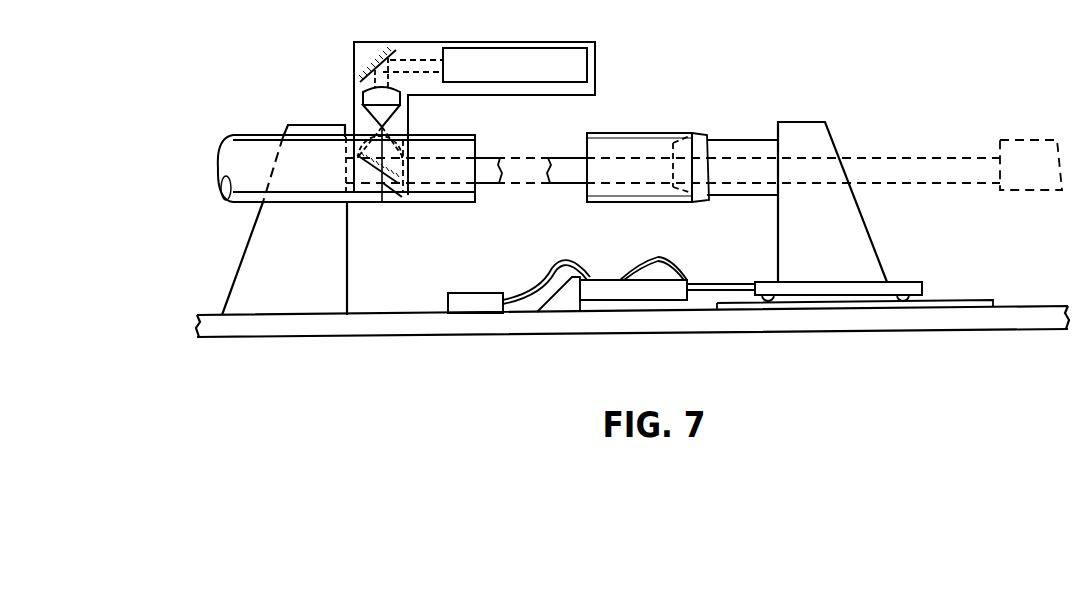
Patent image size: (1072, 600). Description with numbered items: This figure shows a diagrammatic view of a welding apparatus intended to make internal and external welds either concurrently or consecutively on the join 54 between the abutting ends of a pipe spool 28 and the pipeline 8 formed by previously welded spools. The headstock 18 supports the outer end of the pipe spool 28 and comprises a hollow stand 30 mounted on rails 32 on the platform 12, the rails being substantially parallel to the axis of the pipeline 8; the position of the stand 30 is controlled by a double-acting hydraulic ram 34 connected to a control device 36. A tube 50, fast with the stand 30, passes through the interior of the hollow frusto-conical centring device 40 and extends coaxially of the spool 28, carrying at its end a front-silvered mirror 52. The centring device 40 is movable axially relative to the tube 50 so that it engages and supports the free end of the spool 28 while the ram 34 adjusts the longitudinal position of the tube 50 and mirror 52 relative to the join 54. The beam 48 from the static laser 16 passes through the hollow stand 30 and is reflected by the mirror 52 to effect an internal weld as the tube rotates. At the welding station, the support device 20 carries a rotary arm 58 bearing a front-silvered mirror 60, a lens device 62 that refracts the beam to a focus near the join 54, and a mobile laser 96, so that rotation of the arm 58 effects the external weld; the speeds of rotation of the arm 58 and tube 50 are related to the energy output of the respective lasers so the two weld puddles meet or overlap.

The pipeline 8 is at (250, 147).
The platform 12 is at (748, 324).
The static laser 16 is at (1028, 148).
The headstock 18 is at (807, 122).
The device at the welding station 20 is at (312, 128).
The pipe spool 28 is at (640, 146).
The stand 30 is at (845, 266).
The rails 32 is at (971, 306).
The double-acting hydraulic ram 34 is at (638, 292).
The control device 36 is at (475, 305).
The centring device 40 is at (700, 145).
The laser beam 48 is at (923, 158).
The tube 50 is at (494, 184).
The front-silvered mirror 52 is at (374, 170).
The join 54 is at (389, 190).
The rotary arm 58 is at (353, 80).
The front-silvered mirror 60 is at (395, 52).
The lens device 62 is at (390, 98).
The mobile laser 96 is at (534, 57).